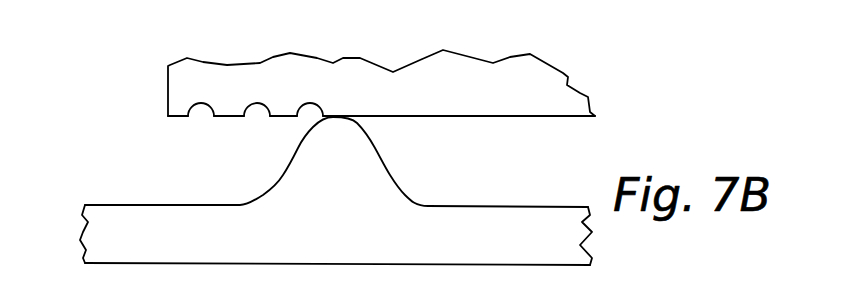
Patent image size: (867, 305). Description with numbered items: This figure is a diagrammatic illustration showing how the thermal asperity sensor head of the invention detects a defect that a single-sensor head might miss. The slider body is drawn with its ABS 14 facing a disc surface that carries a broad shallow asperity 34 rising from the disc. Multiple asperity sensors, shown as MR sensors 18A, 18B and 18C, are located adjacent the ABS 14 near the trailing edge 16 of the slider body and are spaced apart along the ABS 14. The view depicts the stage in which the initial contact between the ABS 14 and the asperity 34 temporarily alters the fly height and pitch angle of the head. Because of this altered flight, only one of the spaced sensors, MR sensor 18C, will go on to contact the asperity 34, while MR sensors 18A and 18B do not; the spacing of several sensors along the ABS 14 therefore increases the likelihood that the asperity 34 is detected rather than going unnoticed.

The ABS 14 is at (497, 118).
The trailing edge 16 is at (168, 88).
The MR sensor 18A is at (177, 114).
The MR sensor 18B is at (221, 113).
The MR sensor 18C is at (281, 113).
The asperity 34 is at (382, 158).